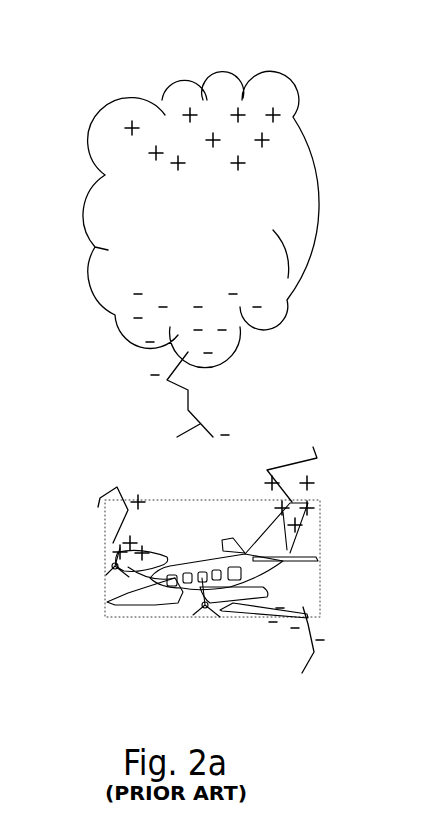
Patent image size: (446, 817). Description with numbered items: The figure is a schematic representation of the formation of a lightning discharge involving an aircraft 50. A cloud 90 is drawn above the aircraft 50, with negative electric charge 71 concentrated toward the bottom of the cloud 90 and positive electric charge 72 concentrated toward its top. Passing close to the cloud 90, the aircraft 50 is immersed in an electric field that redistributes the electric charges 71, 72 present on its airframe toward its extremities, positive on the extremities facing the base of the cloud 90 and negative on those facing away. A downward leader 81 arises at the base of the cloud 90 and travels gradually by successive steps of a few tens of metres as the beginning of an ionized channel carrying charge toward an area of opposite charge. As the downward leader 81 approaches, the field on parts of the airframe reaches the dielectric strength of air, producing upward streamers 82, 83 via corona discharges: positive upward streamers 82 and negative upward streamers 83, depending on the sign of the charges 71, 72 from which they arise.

The cloud 90 is at (276, 69).
The positive electric charge 72 is at (283, 137).
The negative electric charge 71 is at (270, 305).
The downward leader 81 is at (190, 385).
The positive upward streamer 82 is at (313, 447).
The negative upward streamer 83 is at (307, 624).
The aircraft 50 is at (138, 608).